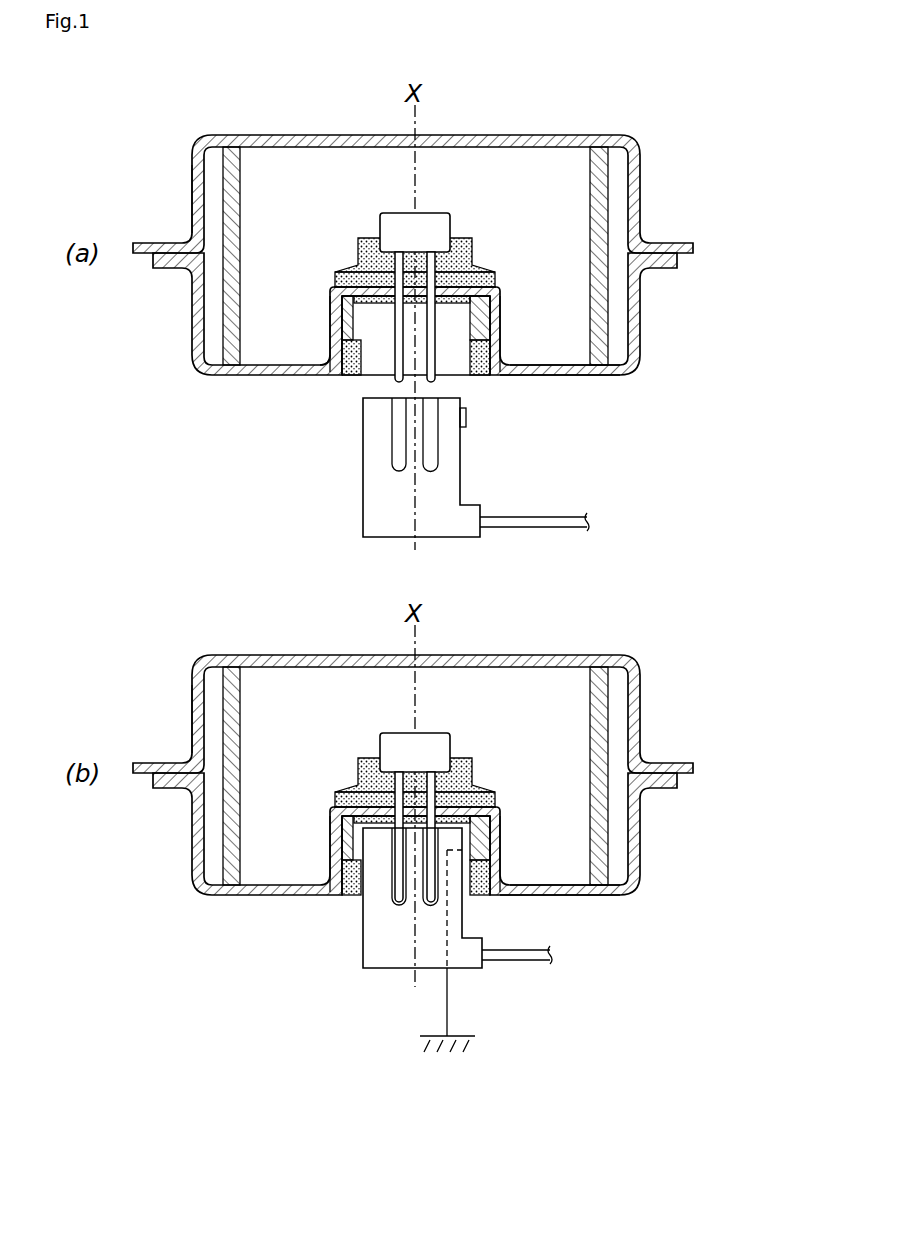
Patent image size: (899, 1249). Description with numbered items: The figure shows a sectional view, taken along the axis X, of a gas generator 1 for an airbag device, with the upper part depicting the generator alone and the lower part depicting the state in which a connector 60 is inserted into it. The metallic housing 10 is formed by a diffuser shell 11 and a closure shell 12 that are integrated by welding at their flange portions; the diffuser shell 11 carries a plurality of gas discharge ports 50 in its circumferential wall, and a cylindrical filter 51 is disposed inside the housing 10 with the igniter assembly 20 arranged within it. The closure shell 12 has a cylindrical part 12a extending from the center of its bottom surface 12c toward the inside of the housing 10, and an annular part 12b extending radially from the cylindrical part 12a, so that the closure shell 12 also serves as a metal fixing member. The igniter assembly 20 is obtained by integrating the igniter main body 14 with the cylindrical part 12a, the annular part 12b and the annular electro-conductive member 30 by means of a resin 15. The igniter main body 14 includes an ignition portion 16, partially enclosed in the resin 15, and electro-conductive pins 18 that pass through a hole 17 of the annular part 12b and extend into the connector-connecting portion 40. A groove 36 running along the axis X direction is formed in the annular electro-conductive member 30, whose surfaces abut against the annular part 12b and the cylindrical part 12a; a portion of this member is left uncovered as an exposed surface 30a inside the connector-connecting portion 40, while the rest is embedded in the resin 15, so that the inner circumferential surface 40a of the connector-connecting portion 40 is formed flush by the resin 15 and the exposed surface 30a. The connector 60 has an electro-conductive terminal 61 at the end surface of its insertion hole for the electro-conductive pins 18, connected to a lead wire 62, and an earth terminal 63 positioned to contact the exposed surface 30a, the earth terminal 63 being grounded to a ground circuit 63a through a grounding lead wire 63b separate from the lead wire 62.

The gas generator 1 is at (633, 111).
The metallic housing 10 is at (748, 212).
The diffuser shell 11 is at (640, 218).
The closure shell 12 is at (640, 302).
The cylindrical part 12a is at (335, 315).
The annular part 12b is at (345, 290).
The bottom surface 12c is at (572, 372).
The igniter main body 14 is at (288, 208).
The resin 15 is at (485, 372).
The ignition portion 16 is at (378, 215).
The hole 17 is at (477, 268).
The electro-conductive pins 18 is at (358, 262).
The igniter assembly 20 is at (454, 208).
The annular electro-conductive member 30 is at (487, 328).
The exposed surface 30a is at (480, 332).
The groove 36 is at (362, 302).
The connector-connecting portion 40 is at (380, 367).
The inner circumferential surface 40a is at (370, 373).
The gas discharge ports 50 is at (198, 190).
The cylindrical filter 51 is at (228, 290).
The connector 60 is at (370, 517).
The electro-conductive terminal 61 is at (392, 457).
The lead wire 62 is at (516, 521).
The earth terminal 63 is at (464, 420).
The ground circuit 63a is at (481, 1071).
The grounding lead wire 63b is at (447, 1013).